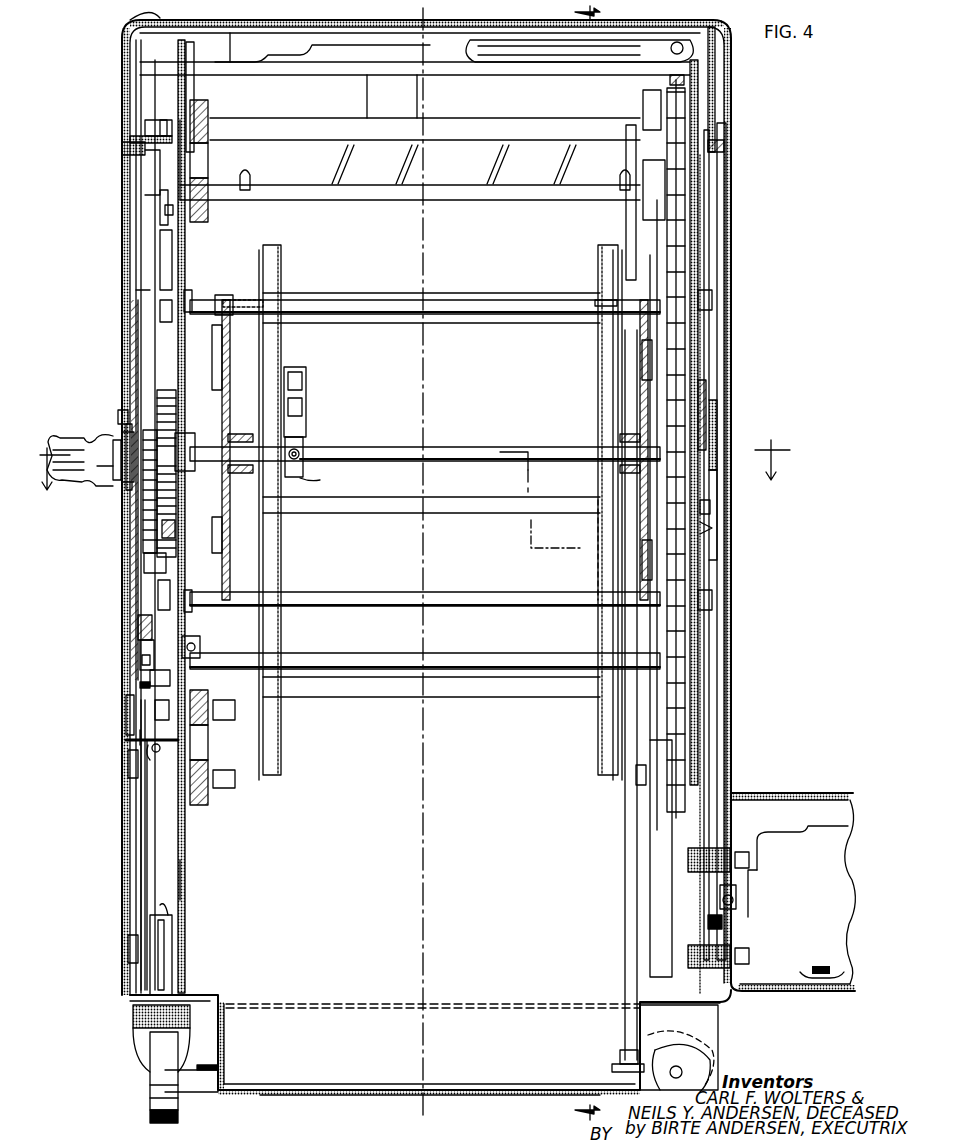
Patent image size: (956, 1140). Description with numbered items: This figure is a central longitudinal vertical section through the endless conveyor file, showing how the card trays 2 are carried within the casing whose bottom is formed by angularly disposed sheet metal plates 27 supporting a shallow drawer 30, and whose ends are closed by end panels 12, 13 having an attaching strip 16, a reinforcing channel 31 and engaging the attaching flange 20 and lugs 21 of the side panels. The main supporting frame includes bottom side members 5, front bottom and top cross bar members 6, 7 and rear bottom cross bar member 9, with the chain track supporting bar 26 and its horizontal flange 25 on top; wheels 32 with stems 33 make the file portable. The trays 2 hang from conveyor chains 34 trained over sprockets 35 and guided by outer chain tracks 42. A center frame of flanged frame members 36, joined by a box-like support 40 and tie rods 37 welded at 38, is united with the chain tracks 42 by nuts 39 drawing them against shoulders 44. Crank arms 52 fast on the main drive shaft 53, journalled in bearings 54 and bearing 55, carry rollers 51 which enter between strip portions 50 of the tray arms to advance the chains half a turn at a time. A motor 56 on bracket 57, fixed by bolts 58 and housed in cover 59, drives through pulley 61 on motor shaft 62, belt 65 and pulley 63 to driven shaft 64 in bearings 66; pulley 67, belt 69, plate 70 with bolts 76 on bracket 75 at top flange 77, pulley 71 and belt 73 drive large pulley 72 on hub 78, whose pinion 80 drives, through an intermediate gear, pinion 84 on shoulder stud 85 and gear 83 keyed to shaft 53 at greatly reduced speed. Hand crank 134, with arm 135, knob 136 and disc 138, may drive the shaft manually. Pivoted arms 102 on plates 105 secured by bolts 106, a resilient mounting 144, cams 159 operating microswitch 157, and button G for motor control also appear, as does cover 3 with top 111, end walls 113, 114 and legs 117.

The card trays 2 is at (480, 330).
The removable cover 3 is at (127, 60).
The bottom side members 5 is at (415, 476).
The bottom cross bar member 6 is at (182, 877).
The top cross bar member 7 is at (162, 222).
The bottom cross bar member 9 is at (698, 898).
The end panel 12 is at (134, 250).
The end panel 13 is at (733, 262).
The attaching strip 16 is at (136, 888).
The attaching flange 20 is at (140, 852).
The attaching lugs 21 is at (128, 765).
The horizontal flange 25 is at (130, 160).
The chain track supporting bar 26 is at (195, 78).
The sheet metal plates 27 is at (330, 1060).
The shallow tray or drawer 30 is at (330, 1097).
The reinforcing channel 31 is at (126, 706).
The wheels 32 is at (150, 1108).
The stems 33 is at (168, 960).
The conveyor chains 34 is at (678, 237).
The sprockets 35 is at (212, 116).
The flanged frame members 36 is at (272, 270).
The tie rods 37 is at (364, 298).
The weld 38 is at (258, 296).
The nuts 39 is at (165, 322).
The box-like sheet metal support 40 is at (364, 569).
The outer chain track 42 is at (180, 252).
The shoulders 44 is at (192, 296).
The strip portions 50 is at (222, 306).
The rollers 51 is at (223, 378).
The crank arms 52 is at (229, 432).
The main drive shaft 53 is at (486, 446).
The bearings 54 is at (255, 474).
The bearing 55 is at (190, 444).
The motor 56 is at (823, 908).
The supporting bracket 57 is at (790, 992).
The bolts 58 is at (688, 858).
The removable cover 59 is at (808, 793).
The pulley 61 is at (722, 925).
The motor shaft 62 is at (740, 893).
The pulley 63 is at (727, 640).
The driven shaft 64 is at (532, 658).
The endless belt 65 is at (710, 720).
The bearings 66 is at (202, 648).
The pulley 67 is at (146, 682).
The endless belt 69 is at (160, 640).
The supporting plate 70 is at (140, 628).
The pulley 71 is at (136, 660).
The pulley 72 is at (136, 338).
The endless belt 73 is at (138, 296).
The bracket 75 is at (140, 735).
The bolts 76 is at (155, 714).
The top flange 77 is at (150, 750).
The hub 78 is at (128, 447).
The pinion 80 is at (150, 430).
The gear 83 is at (174, 398).
The pinion 84 is at (170, 538).
The shoulder stud 85 is at (146, 555).
The pivoted arms 102 is at (710, 455).
The plates 105 is at (711, 510).
The bolts 106 is at (712, 528).
The sheet metal top 111 is at (134, 20).
The front end wall 113 is at (122, 105).
The rear end wall 114 is at (733, 125).
The legs 117 is at (560, 64).
The hand crank 134 is at (95, 483).
The arm 135 is at (116, 438).
The hand knob 136 is at (60, 435).
The pivoted disc 138 is at (120, 410).
The resilient mounting 144 is at (620, 1064).
The microswitch 157 is at (318, 436).
The cams 159 is at (414, 481).
The button G is at (161, 122).